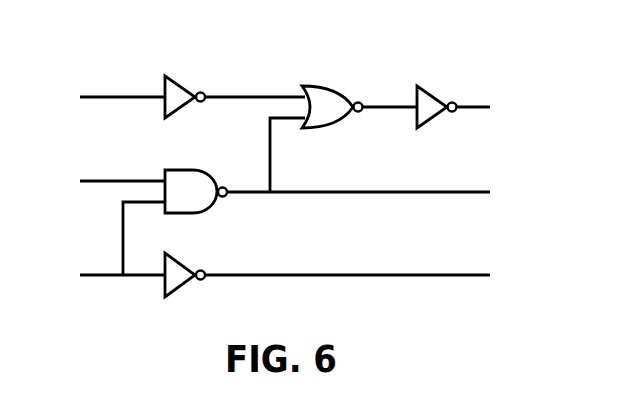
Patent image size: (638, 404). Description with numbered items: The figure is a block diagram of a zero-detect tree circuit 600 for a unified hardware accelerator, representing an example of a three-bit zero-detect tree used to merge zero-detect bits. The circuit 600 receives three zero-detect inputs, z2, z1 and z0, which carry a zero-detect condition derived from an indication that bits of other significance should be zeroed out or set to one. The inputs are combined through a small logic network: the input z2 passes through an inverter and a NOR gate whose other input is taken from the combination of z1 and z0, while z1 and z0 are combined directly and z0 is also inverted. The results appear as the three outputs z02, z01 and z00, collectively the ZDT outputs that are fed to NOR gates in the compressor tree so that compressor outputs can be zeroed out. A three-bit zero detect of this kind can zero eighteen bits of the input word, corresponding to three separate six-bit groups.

The zero-detect tree circuit 600 is at (133, 32).
The input signal z2 is at (107, 97).
The input signal z1 is at (107, 181).
The input signal z0 is at (107, 244).
The zero-detect tree output z02 is at (497, 107).
The zero-detect tree output z01 is at (382, 160).
The zero-detect tree output z00 is at (371, 275).